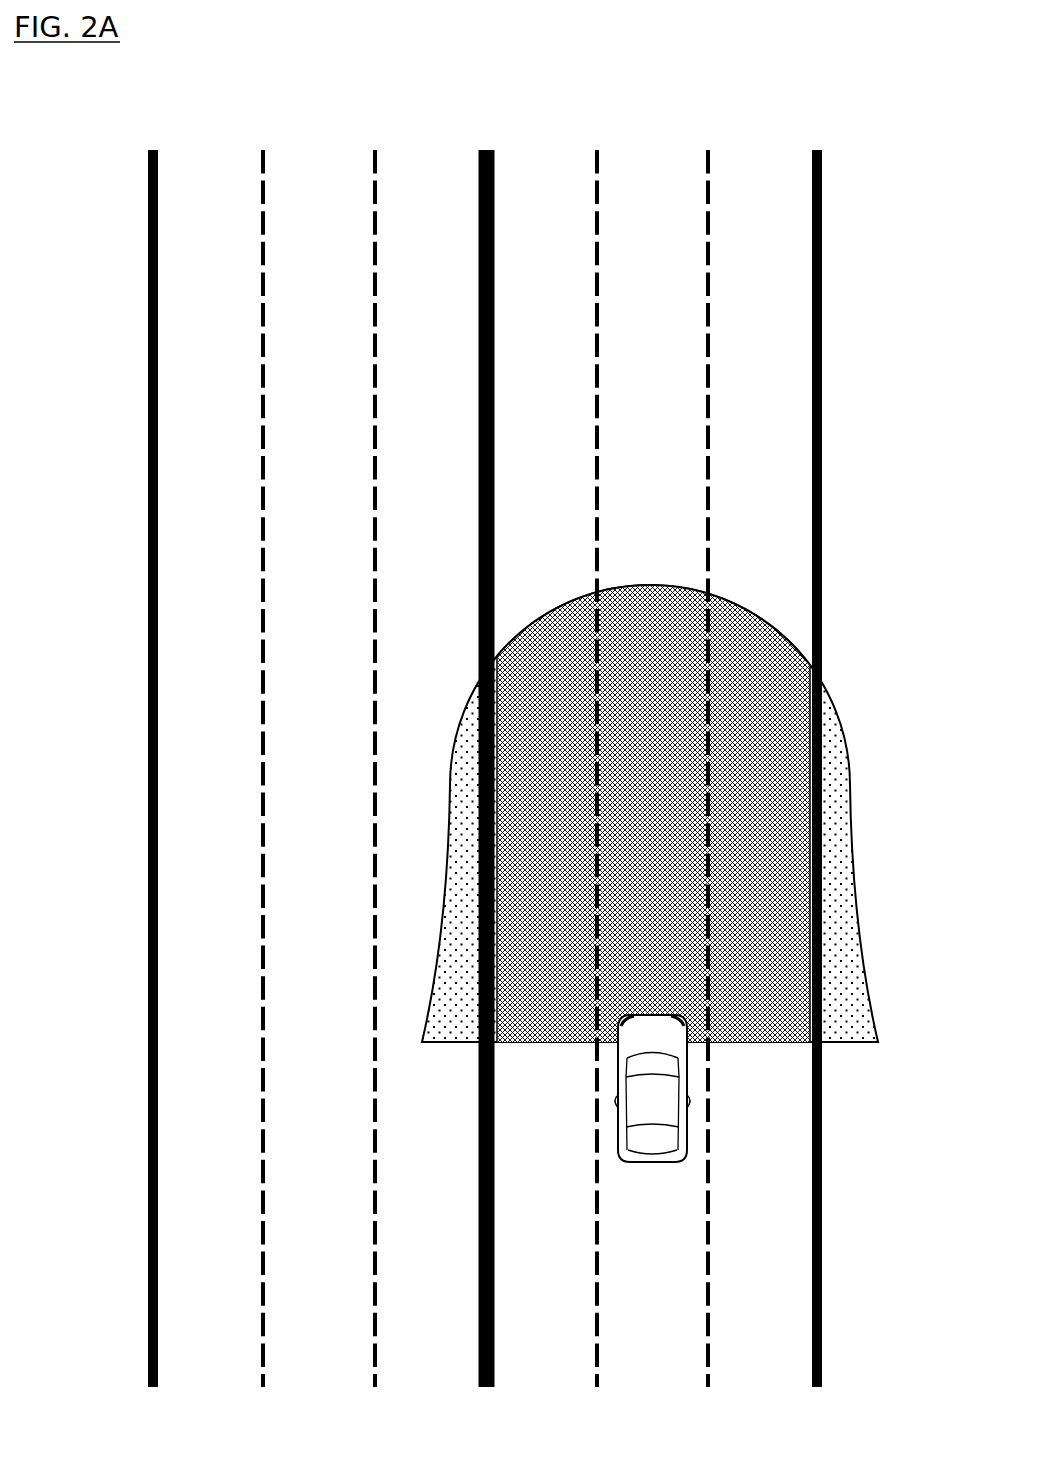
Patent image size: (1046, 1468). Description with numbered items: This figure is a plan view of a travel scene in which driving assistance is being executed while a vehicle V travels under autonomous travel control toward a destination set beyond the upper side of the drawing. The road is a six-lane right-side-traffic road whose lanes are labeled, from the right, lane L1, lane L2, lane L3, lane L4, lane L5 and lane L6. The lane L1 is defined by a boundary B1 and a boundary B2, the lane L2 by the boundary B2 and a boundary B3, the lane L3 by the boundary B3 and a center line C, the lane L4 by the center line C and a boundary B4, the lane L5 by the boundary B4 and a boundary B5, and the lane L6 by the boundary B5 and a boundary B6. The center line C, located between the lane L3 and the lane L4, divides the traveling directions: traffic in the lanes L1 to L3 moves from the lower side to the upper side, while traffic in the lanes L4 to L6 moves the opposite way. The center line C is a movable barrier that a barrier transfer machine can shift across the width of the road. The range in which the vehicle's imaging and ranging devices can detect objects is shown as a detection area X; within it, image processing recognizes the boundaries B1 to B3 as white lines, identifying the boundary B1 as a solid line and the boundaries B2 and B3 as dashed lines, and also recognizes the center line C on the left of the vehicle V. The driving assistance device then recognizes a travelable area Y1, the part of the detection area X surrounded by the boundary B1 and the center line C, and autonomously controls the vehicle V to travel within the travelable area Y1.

The lane L1 is at (767, 148).
The lane L2 is at (656, 148).
The lane L3 is at (543, 148).
The lane L4 is at (431, 148).
The lane L5 is at (318, 148).
The lane L6 is at (208, 148).
The boundary B1 is at (822, 370).
The boundary B2 is at (711, 370).
The boundary B3 is at (600, 370).
The boundary B4 is at (378, 370).
The boundary B5 is at (266, 370).
The boundary B6 is at (158, 370).
The center line C is at (496, 370).
The detection area X is at (855, 776).
The travelable area Y1 is at (733, 597).
The vehicle V is at (642, 1160).